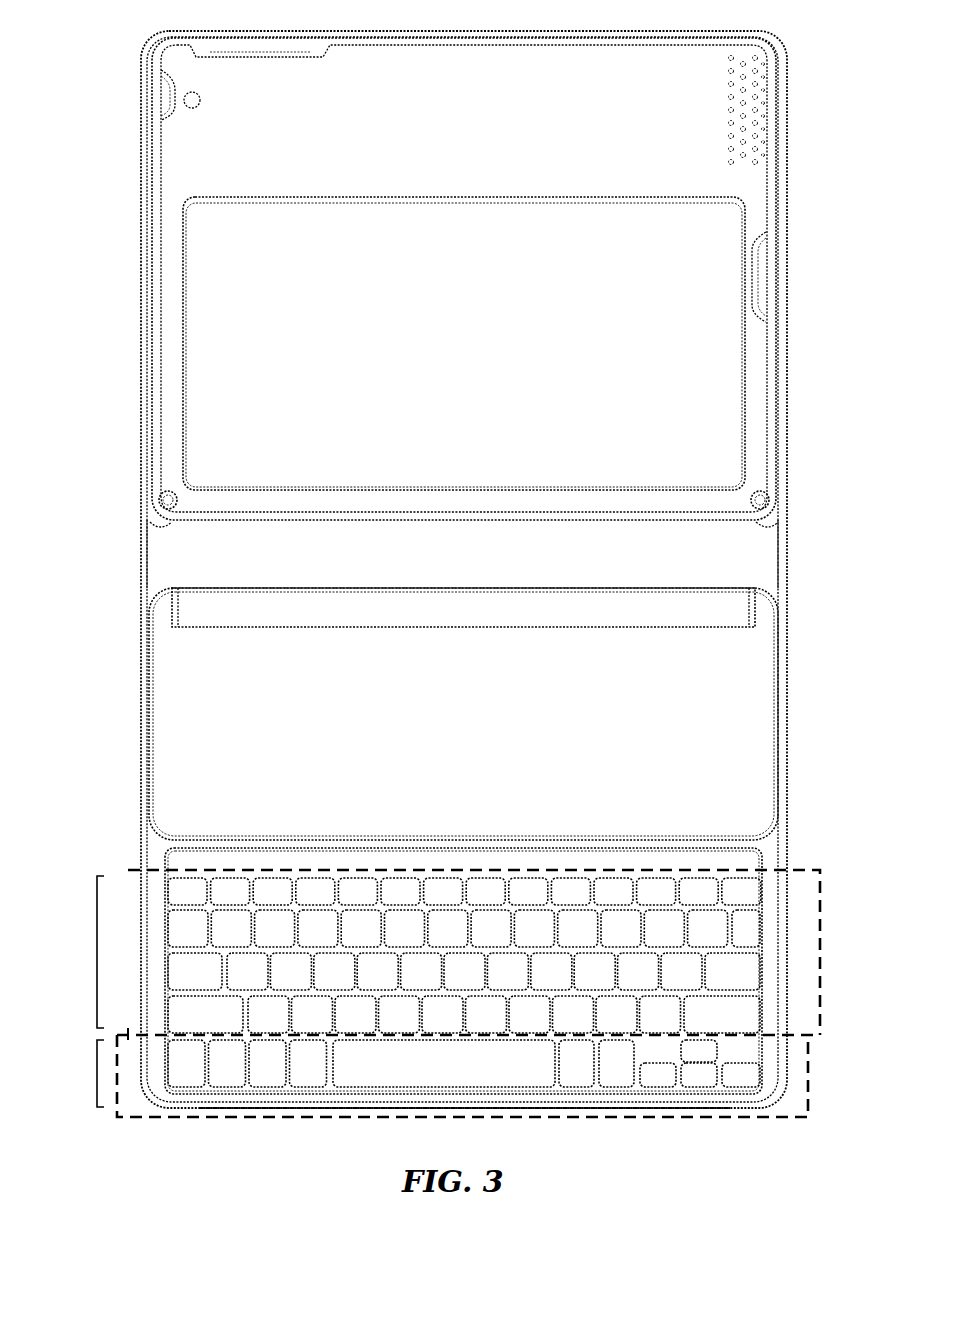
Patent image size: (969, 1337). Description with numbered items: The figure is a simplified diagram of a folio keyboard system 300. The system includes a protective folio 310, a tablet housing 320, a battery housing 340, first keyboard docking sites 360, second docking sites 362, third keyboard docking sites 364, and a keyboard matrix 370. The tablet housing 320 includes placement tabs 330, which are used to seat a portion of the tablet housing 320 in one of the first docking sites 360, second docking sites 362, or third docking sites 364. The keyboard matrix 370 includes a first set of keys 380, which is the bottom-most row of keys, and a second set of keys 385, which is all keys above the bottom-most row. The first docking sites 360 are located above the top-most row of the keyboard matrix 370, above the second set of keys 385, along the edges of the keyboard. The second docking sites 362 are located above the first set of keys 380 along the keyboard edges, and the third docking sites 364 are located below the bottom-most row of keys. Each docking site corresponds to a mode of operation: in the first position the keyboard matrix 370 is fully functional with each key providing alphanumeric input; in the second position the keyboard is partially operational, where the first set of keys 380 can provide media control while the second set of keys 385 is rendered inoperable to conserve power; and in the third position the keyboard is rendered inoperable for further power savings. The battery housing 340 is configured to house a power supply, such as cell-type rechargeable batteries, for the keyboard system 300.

The folio keyboard system 300 is at (132, 1157).
The protective folio 310 is at (163, 565).
The tablet housing 320 is at (777, 395).
The placement tabs 330 is at (162, 525).
The battery housing 340 is at (740, 606).
The first keyboard docking sites 360 is at (160, 843).
The second docking sites 362 is at (823, 997).
The third keyboard docking sites 364 is at (125, 1112).
The keyboard matrix 370 is at (434, 971).
The first set of keys 380 is at (325, 1118).
The second set of keys 385 is at (130, 870).